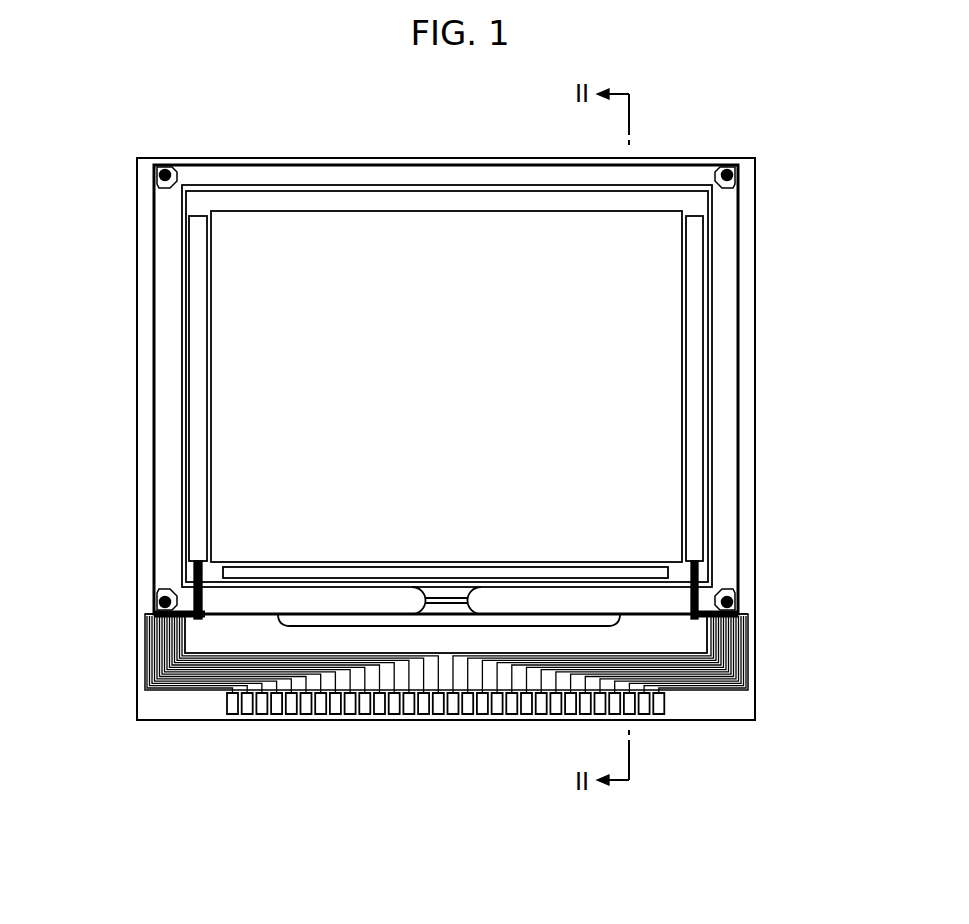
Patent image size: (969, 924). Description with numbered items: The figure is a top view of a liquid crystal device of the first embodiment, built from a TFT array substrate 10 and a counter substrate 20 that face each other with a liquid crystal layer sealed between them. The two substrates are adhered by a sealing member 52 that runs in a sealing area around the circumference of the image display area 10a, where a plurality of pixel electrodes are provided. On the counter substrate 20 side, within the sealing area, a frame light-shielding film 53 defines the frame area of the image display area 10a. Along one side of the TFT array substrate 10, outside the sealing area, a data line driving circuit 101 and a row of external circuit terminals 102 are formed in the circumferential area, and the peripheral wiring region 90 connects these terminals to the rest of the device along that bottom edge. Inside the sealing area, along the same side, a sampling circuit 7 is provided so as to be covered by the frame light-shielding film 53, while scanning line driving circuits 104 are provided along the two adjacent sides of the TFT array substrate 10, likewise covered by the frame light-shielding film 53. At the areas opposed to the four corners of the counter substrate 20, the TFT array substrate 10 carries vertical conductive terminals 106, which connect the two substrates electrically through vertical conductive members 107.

The TFT array substrate 10 is at (266, 157).
The image display area 10a is at (255, 343).
The counter substrate 20 is at (467, 164).
The sealing member 52 is at (729, 319).
The scanning line driving circuit 104 is at (697, 386).
The sampling circuit 7 is at (600, 567).
The frame light-shielding film 53 is at (705, 570).
The vertical conductive terminal 106 is at (173, 172).
The vertical conductive member 107 is at (158, 607).
The peripheral wiring region 90 is at (145, 665).
The data line driving circuit 101 is at (208, 645).
The external circuit terminal 102 is at (410, 717).